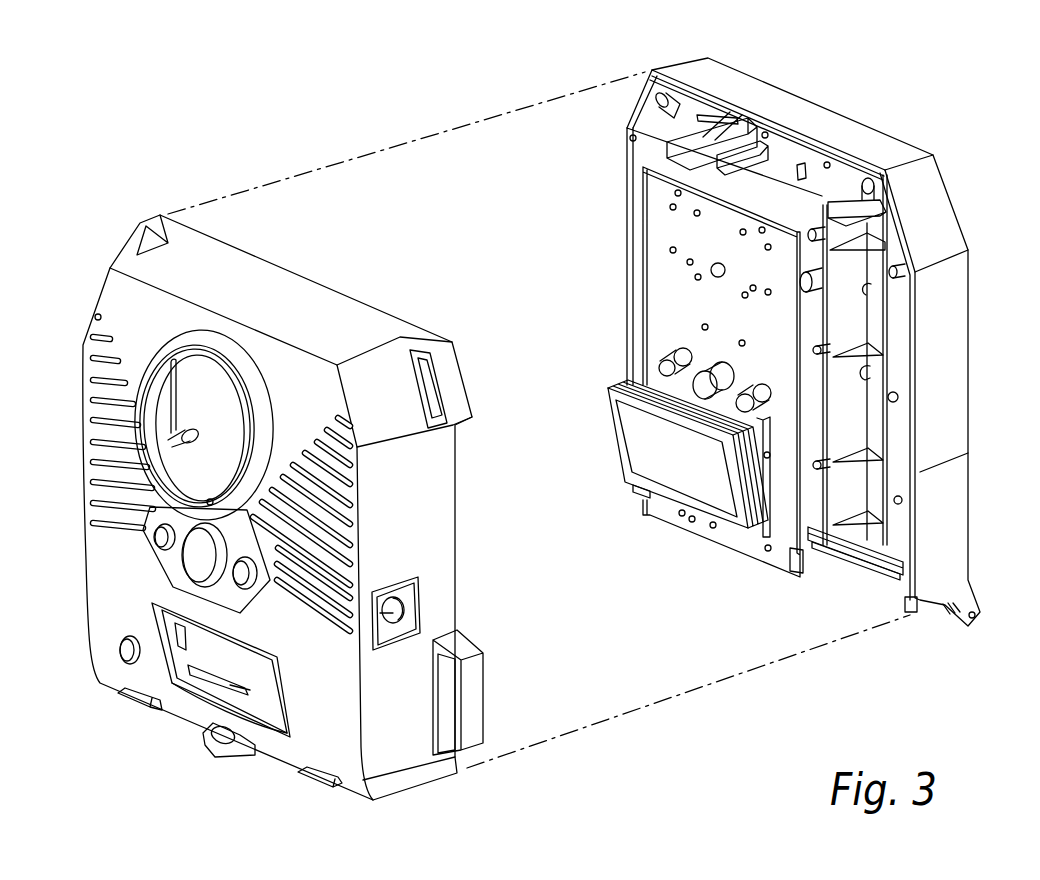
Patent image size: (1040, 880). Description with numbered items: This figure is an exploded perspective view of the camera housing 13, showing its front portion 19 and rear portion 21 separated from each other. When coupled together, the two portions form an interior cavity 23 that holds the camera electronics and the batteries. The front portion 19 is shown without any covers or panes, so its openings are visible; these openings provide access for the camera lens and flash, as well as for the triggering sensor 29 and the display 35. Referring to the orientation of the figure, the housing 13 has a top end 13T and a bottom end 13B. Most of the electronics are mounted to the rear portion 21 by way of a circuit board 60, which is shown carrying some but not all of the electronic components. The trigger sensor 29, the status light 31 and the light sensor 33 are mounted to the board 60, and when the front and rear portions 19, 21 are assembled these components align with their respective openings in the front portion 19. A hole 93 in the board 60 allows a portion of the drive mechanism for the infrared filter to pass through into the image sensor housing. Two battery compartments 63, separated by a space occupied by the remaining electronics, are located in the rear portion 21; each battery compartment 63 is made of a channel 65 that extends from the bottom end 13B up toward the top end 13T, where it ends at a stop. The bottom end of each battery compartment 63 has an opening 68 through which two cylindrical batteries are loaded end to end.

The housing 13 is at (470, 740).
The top end 13T is at (822, 125).
The bottom end 13B is at (833, 550).
The front portion 19 is at (115, 302).
The rear portion 21 is at (877, 145).
The interior cavity 23 is at (200, 677).
The triggering sensor 29 is at (700, 385).
The status light 31 is at (668, 360).
The light sensor 33 is at (762, 407).
The display 35 is at (687, 478).
The circuit board 60 is at (668, 290).
The battery compartment 63 is at (870, 290).
The channel 65 is at (866, 372).
The opening 68 is at (865, 560).
The hole 93 is at (714, 263).